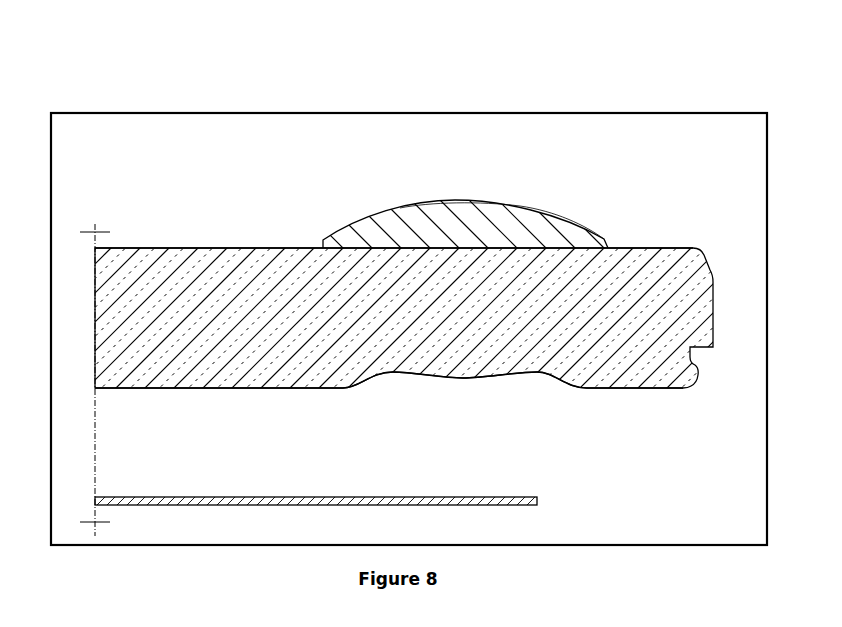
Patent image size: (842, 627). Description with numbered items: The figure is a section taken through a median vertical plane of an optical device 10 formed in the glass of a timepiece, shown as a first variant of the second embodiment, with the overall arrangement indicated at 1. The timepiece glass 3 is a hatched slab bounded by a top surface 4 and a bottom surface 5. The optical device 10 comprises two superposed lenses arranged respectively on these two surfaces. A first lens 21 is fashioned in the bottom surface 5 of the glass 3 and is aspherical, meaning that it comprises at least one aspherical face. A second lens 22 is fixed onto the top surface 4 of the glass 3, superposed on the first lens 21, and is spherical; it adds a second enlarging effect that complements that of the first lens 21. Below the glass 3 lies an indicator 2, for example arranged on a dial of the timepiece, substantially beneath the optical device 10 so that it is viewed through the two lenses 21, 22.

The assembly 1 is at (238, 100).
The indicator 2 is at (537, 501).
The timepiece glass 3 is at (240, 376).
The top surface 4 is at (648, 240).
The bottom surface 5 is at (643, 396).
The optical device 10 is at (390, 188).
The first lens 21 is at (473, 374).
The second lens 22 is at (541, 226).